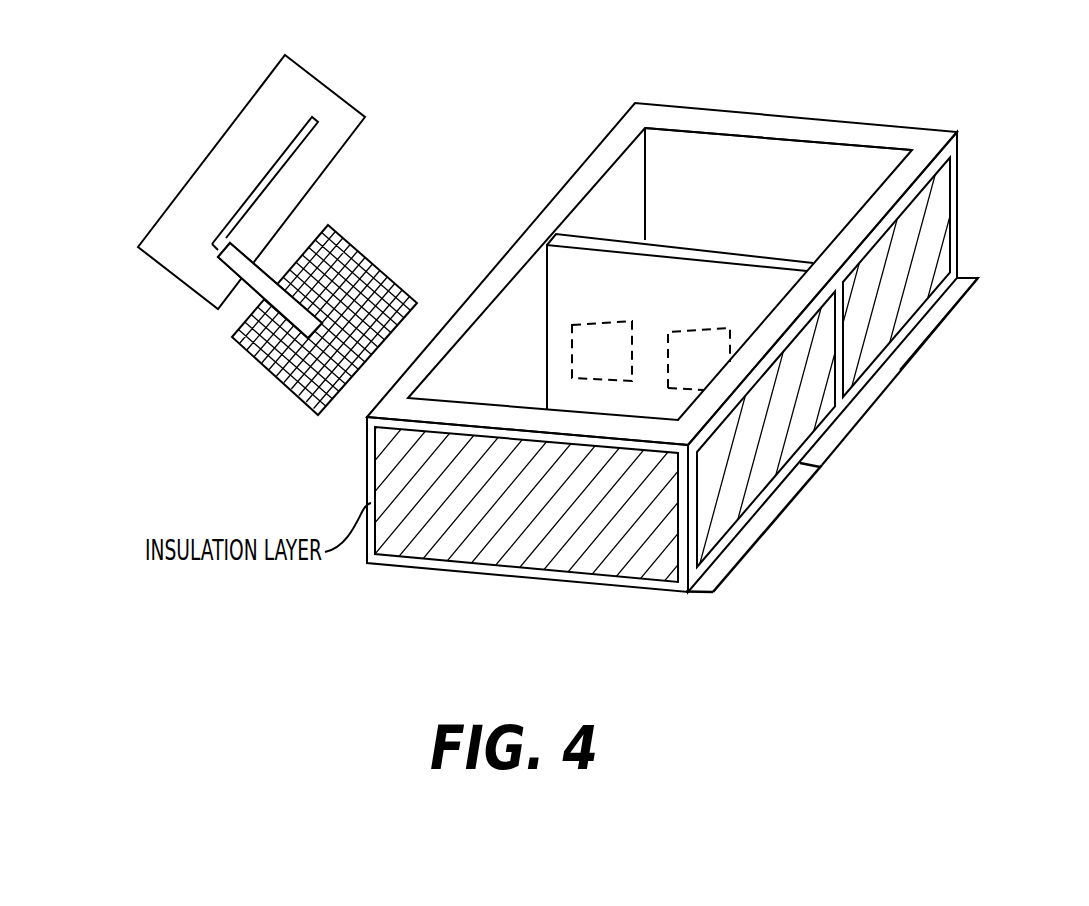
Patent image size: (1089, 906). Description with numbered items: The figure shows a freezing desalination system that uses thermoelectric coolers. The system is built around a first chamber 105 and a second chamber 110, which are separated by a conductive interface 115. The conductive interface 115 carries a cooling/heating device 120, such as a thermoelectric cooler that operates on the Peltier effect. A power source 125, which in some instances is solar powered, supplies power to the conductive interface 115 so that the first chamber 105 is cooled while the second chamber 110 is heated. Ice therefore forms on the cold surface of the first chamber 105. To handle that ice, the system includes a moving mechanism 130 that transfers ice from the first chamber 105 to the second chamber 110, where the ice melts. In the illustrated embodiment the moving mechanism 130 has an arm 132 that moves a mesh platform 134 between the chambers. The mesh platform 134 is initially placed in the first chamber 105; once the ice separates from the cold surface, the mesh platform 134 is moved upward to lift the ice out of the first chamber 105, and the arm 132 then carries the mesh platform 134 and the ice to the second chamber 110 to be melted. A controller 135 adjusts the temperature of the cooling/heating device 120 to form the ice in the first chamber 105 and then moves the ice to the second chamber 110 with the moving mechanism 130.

The first chamber 105 is at (522, 355).
The second chamber 110 is at (784, 216).
The conductive interface 115 is at (602, 278).
The cooling/heating device 120 is at (714, 334).
The power source 125 is at (967, 293).
The moving mechanism 130 is at (170, 244).
The arm 132 is at (242, 268).
The mesh platform 134 is at (282, 375).
The controller 135 is at (795, 498).